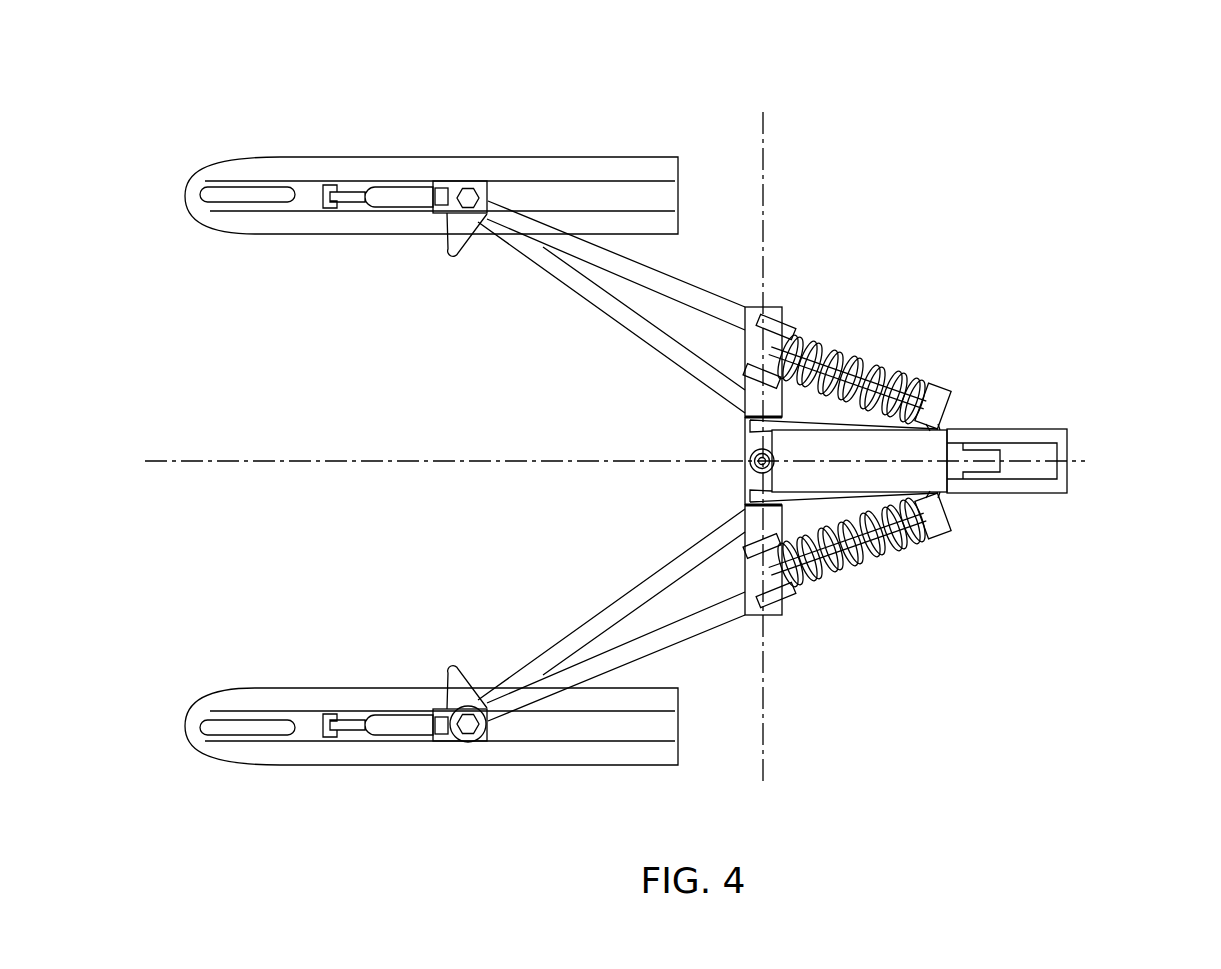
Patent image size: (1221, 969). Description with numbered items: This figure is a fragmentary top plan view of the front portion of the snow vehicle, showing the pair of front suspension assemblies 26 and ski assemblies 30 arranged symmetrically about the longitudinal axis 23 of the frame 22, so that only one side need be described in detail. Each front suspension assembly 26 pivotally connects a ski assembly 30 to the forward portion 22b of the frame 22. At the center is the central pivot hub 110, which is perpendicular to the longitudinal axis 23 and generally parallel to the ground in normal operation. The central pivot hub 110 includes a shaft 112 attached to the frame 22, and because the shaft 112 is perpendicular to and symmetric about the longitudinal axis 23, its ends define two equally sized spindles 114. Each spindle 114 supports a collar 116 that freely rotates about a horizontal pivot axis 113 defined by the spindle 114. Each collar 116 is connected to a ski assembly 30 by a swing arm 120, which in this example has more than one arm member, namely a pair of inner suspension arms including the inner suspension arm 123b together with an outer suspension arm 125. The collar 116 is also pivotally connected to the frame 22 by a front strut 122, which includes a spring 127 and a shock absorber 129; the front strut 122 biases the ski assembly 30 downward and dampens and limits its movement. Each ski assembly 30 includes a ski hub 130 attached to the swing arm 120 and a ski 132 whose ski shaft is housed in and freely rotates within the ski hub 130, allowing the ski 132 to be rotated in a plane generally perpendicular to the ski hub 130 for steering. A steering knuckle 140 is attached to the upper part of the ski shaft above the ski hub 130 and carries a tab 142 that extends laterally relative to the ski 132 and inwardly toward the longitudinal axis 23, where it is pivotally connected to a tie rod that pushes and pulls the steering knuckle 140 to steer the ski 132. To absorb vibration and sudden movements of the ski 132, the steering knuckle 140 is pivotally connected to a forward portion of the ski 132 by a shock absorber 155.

The frame 22 is at (1005, 432).
The forward portion of the frame 22b is at (816, 113).
The longitudinal axis 23 is at (228, 470).
The front suspension assembly 26 is at (592, 461).
The ski assembly 30 is at (431, 463).
The central pivot hub 110 is at (712, 471).
The shaft 112 is at (814, 464).
The horizontal pivot axis 113 is at (770, 760).
The spindle 114 is at (772, 303).
The collar 116 is at (753, 397).
The swing arm 120 is at (611, 461).
The front strut 122 is at (866, 368).
The inner suspension arm 123b is at (657, 343).
The outer suspension arm 125 is at (705, 297).
The spring 127 is at (828, 343).
The shock absorber 129 is at (898, 387).
The ski hub 130 is at (468, 745).
The ski 132 is at (577, 168).
The steering knuckle 140 is at (448, 248).
The tab 142 is at (467, 230).
The shock absorber 155 is at (400, 190).